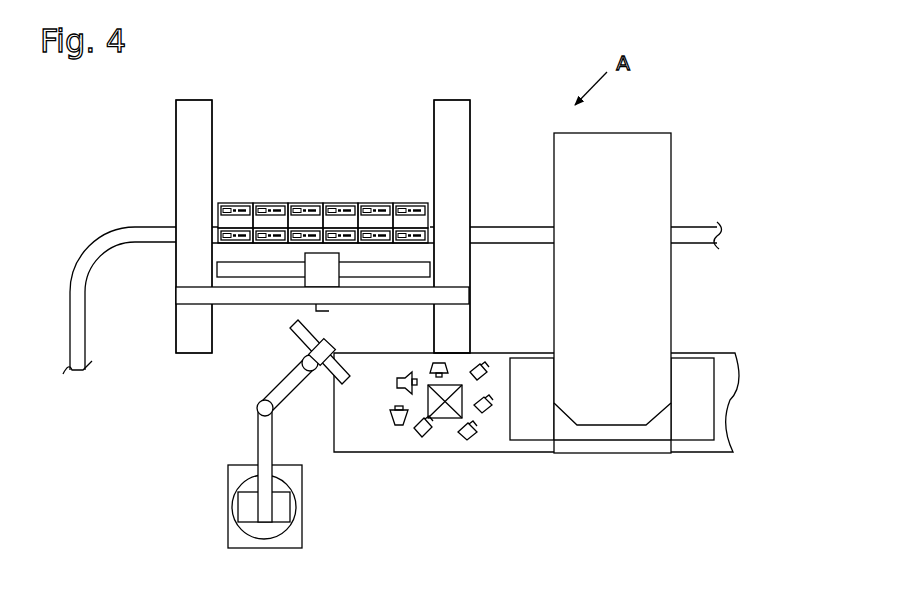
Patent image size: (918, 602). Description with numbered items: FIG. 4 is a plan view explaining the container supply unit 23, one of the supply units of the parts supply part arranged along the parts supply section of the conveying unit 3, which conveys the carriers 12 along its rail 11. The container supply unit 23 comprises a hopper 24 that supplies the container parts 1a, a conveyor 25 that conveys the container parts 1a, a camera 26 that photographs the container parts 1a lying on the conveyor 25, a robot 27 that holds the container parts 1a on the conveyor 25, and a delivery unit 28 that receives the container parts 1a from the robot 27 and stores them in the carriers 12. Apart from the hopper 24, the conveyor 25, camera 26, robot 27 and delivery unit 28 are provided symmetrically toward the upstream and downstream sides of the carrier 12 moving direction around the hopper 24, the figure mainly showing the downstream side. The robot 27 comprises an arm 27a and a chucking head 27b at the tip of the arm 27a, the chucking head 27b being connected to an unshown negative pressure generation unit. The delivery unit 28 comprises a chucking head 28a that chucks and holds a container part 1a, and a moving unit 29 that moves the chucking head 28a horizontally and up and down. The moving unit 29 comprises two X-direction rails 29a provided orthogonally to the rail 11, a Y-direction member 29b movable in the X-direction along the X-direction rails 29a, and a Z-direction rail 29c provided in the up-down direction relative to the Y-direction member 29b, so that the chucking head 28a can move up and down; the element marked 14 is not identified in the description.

The container part 1a is at (400, 426).
The conveying unit 3 is at (73, 267).
The rail 11 is at (110, 231).
The carrier 12 is at (238, 203).
The label 14 is at (318, 243).
The container supply unit 23 is at (472, 98).
The hopper 24 is at (626, 157).
The conveyor 25 is at (510, 455).
The camera 26 is at (447, 420).
The robot 27 is at (302, 533).
The arm 27a is at (256, 430).
The chucking head 27b is at (318, 333).
The delivery unit 28 is at (178, 356).
The chucking head 28a is at (257, 278).
The moving unit 29 is at (474, 155).
The X-direction rail 29a is at (212, 107).
The Y-direction member 29b is at (472, 296).
The Z-direction rail 29c is at (335, 253).